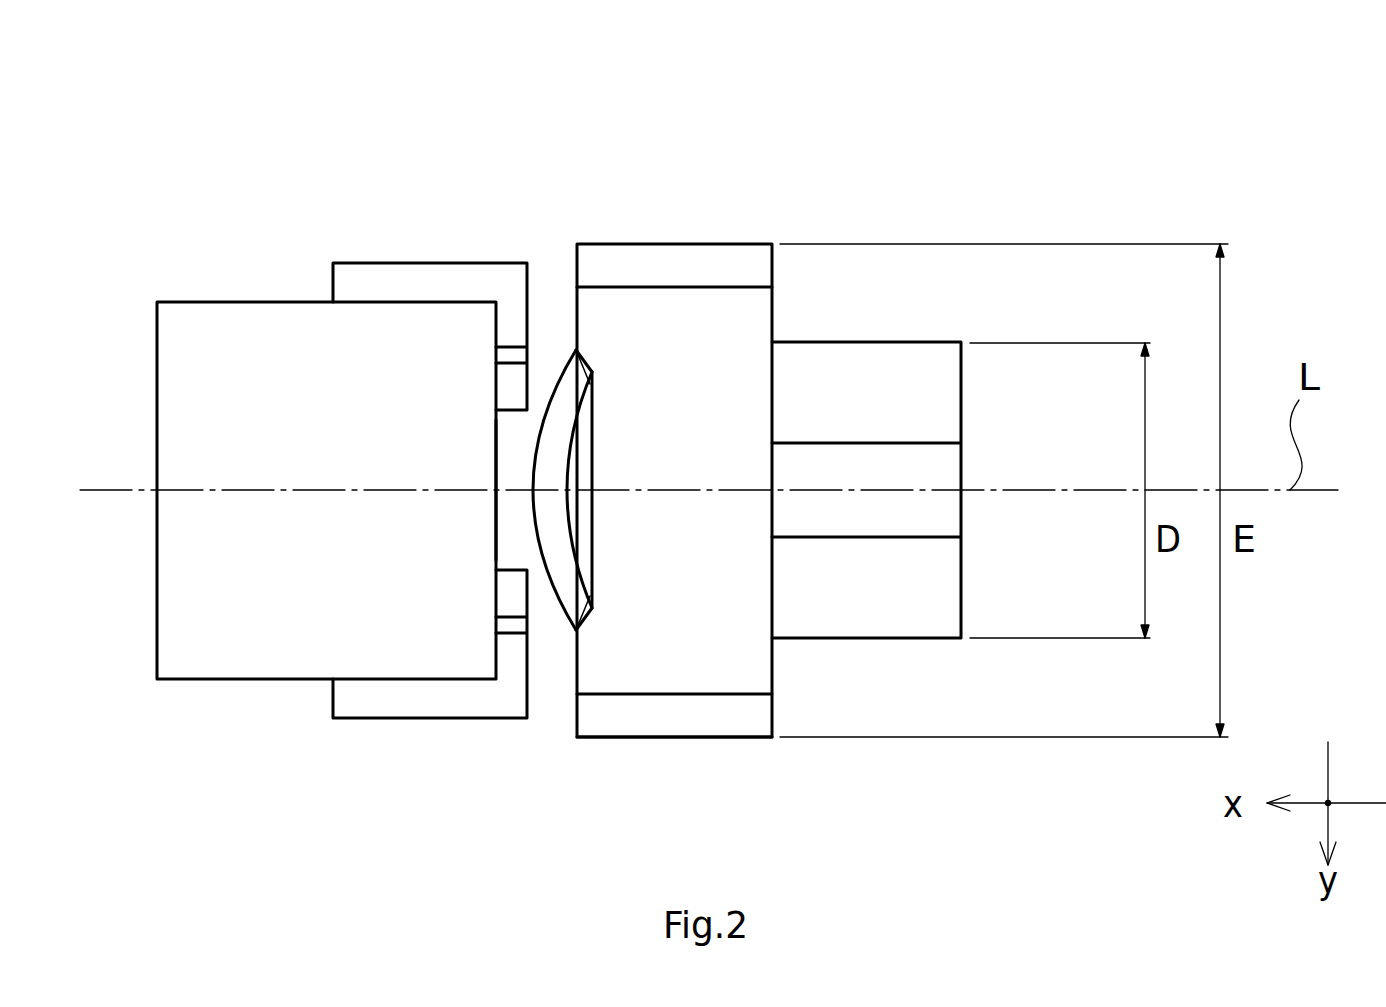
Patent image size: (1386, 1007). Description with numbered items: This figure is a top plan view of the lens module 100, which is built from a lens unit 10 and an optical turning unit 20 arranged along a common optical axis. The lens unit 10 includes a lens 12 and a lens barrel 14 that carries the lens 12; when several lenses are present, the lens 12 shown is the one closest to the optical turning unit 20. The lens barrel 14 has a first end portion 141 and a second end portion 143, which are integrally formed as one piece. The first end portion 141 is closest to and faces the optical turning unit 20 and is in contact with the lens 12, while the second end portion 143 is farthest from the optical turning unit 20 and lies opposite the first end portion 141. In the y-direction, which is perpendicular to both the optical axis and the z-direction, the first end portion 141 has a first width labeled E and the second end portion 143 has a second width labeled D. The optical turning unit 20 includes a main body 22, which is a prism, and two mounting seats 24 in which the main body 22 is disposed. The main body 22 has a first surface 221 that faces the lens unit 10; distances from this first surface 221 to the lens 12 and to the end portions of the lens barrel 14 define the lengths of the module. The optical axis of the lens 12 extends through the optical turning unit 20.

The lens module 100 is at (203, 67).
The optical turning unit 20 is at (448, 141).
The main body 22 is at (253, 353).
The first surface 221 is at (497, 532).
The mounting seats 24 is at (423, 287).
The lens unit 10 is at (763, 141).
The lens 12 is at (558, 413).
The lens barrel 14 is at (717, 328).
The first end portion 141 is at (687, 668).
The second end portion 143 is at (890, 618).